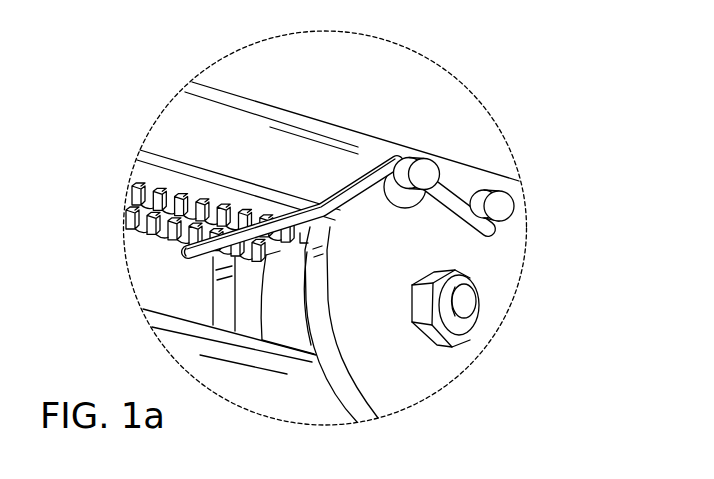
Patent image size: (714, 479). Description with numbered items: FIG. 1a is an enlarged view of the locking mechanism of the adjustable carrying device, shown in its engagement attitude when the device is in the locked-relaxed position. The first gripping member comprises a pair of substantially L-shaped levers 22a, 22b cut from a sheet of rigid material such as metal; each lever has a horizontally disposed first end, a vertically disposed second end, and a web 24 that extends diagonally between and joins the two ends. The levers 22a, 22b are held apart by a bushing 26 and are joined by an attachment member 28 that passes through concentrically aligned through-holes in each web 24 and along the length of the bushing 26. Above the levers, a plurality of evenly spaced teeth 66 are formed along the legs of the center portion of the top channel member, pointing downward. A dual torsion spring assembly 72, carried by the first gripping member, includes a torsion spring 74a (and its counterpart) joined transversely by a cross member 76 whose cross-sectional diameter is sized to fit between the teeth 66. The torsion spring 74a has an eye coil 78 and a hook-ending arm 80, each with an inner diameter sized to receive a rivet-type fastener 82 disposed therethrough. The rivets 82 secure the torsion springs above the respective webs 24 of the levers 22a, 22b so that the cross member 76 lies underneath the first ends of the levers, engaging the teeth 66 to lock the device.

The L-shaped lever 22a is at (446, 373).
The L-shaped lever 22b is at (213, 290).
The web 24 is at (388, 353).
The bushing 26 is at (295, 312).
The attachment member 28 is at (483, 306).
The teeth 66 is at (132, 188).
The dual torsion spring assembly 72 is at (353, 182).
The torsion spring 74a is at (269, 213).
The cross member 76 is at (183, 254).
The eye coil 78 is at (393, 207).
The hook-ending arm 80 is at (481, 186).
The rivet-type fastener 82 is at (428, 160).